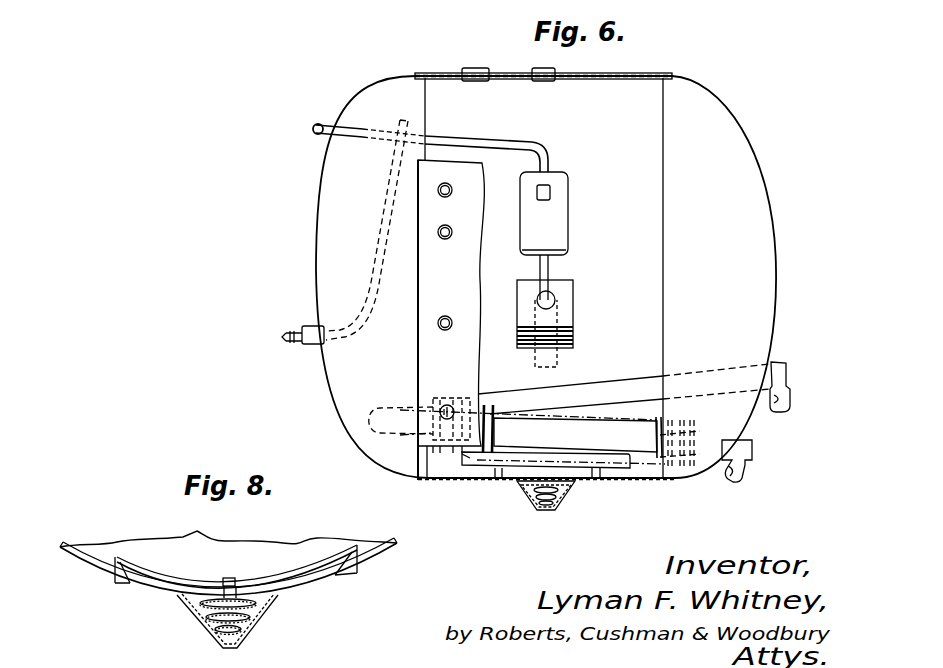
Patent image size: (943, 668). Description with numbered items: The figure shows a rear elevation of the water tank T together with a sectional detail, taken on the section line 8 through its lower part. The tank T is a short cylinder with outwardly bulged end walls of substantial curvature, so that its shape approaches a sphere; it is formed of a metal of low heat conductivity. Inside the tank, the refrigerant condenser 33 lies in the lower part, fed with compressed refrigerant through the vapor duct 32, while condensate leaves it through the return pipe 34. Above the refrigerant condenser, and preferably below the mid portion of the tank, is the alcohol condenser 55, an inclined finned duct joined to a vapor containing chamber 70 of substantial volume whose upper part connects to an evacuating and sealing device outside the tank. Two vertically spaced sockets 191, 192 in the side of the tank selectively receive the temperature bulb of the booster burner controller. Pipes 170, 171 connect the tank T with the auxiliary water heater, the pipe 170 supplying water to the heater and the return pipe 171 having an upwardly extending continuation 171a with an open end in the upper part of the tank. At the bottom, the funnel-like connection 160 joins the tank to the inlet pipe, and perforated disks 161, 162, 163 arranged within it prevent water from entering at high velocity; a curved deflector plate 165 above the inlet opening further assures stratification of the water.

In FIG. 6, the water tank T is at (752, 128).
In FIG. 8, the water tank T is at (87, 564).
In FIG. 6, the section line 8— 8 is at (527, 431).
In FIG. 6, the vapor duct 32 is at (788, 406).
In FIG. 6, the refrigerant condenser 33 is at (582, 392).
In FIG. 6, the return pipe 34 is at (746, 475).
In FIG. 6, the alcohol condenser 55 is at (565, 300).
In FIG. 6, the vapor containing chamber 70 is at (560, 224).
In FIG. 6, the funnel-like connection 160 is at (522, 496).
In FIG. 8, the funnel-like connection 160 is at (270, 604).
In FIG. 8, the perforated disk 161 is at (218, 634).
In FIG. 8, the perforated disk 162 is at (208, 621).
In FIG. 8, the perforated disk 163 is at (195, 607).
In FIG. 6, the curved deflector plate 165 is at (470, 463).
In FIG. 8, the curved deflector plate 165 is at (187, 580).
In FIG. 6, the supply pipe 170 is at (297, 327).
In FIG. 6, the return pipe 171 is at (296, 346).
In FIG. 6, the upwardly extending continuation 171a is at (380, 204).
In FIG. 6, the socket 191 is at (451, 189).
In FIG. 6, the socket 192 is at (451, 229).